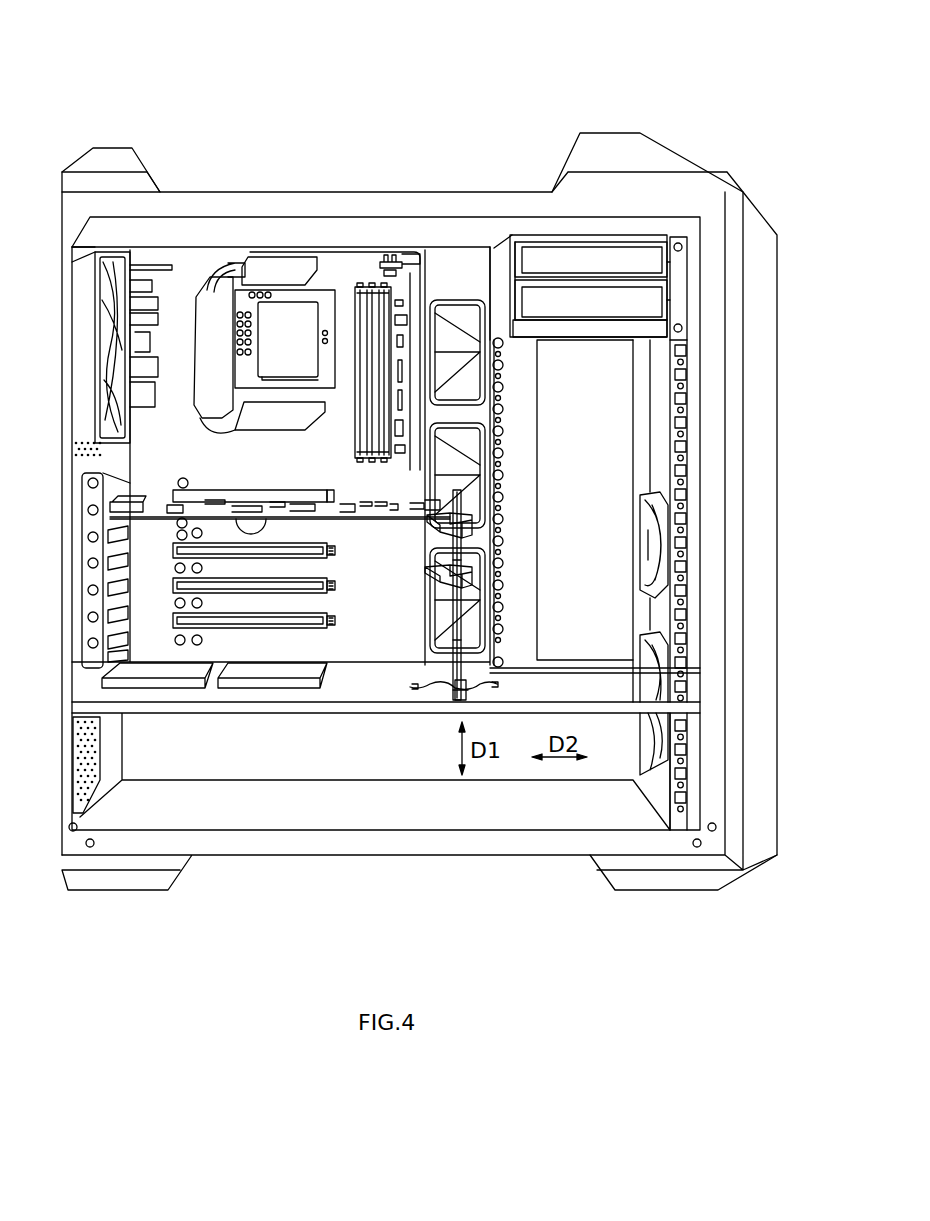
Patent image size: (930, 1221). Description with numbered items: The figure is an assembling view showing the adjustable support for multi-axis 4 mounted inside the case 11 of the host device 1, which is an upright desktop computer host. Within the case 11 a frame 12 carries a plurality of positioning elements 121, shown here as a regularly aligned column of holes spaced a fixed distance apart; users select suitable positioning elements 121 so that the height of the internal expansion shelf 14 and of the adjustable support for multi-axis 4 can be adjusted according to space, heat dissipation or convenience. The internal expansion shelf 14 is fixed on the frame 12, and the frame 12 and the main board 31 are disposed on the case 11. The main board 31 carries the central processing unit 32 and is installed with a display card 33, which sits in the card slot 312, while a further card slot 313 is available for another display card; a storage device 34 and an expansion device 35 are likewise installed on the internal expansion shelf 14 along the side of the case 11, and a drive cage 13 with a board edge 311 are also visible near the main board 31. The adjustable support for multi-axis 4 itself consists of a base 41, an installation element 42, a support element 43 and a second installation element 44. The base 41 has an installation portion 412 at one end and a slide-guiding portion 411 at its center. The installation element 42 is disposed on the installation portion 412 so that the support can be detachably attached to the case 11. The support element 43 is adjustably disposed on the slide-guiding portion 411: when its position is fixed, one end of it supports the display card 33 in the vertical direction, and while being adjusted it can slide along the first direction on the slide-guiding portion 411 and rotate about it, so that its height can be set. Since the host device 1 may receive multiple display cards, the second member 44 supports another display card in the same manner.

The host device 1 is at (177, 83).
The case 11 is at (210, 210).
The frame 12 is at (523, 457).
The positioning elements 121 is at (498, 405).
The drive cage 13 is at (688, 284).
The internal expansion shelf 14 is at (683, 408).
The main board 31 is at (420, 265).
The first side of motherboard 311 is at (330, 305).
The card slot 312 is at (258, 495).
The card slot 313 is at (175, 545).
The central processing unit 32 is at (290, 312).
The display card 33 is at (330, 500).
The storage device 34 is at (655, 425).
The expansion device 35 is at (655, 458).
The adjustable support for multi-axis 4 is at (372, 528).
The base 41 is at (447, 610).
The slide-guiding portion 411 is at (458, 637).
The installation portion 412 is at (453, 683).
The installation element 42 is at (410, 687).
The support element 43 is at (442, 527).
The installation element 44 is at (447, 578).